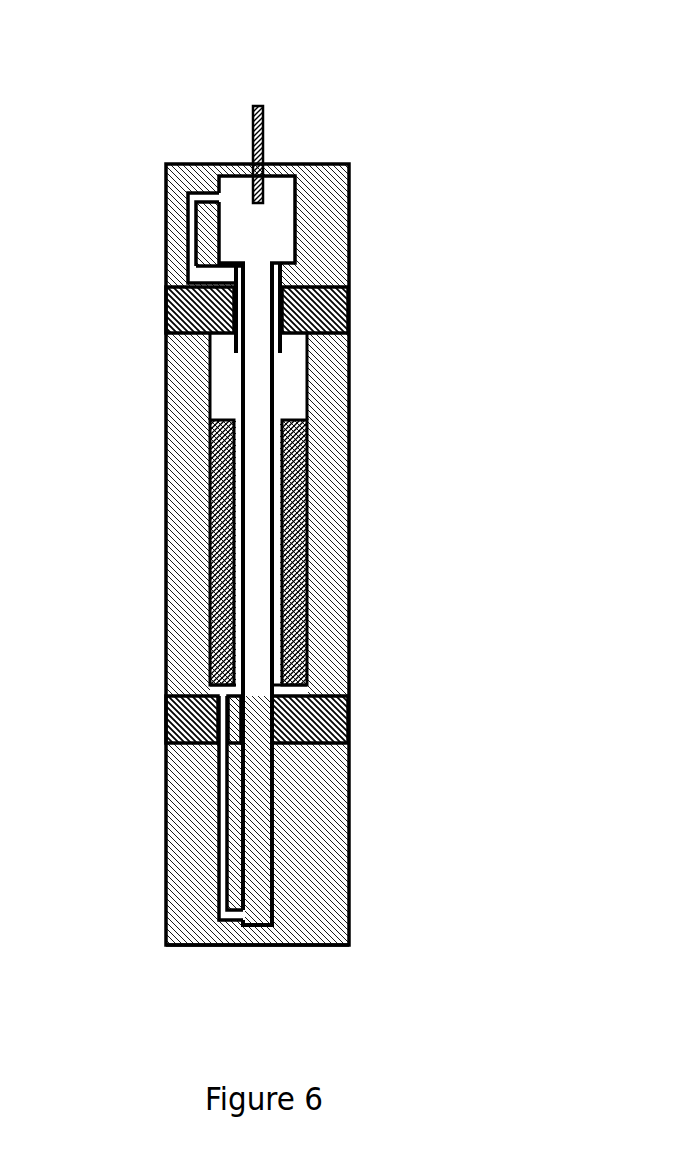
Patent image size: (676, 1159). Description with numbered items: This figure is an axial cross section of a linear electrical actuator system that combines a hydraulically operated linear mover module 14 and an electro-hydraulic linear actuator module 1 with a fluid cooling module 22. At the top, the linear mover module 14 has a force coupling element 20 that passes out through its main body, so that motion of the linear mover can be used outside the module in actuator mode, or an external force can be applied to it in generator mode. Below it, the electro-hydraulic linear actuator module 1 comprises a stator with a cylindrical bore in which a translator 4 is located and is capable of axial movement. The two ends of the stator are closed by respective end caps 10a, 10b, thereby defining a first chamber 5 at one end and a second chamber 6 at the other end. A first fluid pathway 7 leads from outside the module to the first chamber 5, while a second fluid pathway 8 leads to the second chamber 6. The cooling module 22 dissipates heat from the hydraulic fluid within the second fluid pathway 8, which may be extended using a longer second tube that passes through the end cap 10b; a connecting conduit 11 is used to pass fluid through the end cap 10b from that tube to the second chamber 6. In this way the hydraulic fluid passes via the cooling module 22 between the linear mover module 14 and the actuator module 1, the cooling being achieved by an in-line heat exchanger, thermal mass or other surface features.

The electro-hydraulic linear actuator module 1 is at (133, 292).
The hydraulically operated linear mover module 14 is at (133, 165).
The force coupling element 20 is at (266, 106).
The end cap 10a is at (317, 302).
The first chamber 5 is at (292, 343).
The first fluid pathway 7 is at (277, 383).
The translator 4 is at (288, 512).
The second chamber 6 is at (298, 667).
The end cap 10b is at (317, 720).
The fluid cooling module 22 is at (133, 749).
The second fluid pathway 8 is at (257, 395).
The connecting conduit 11 is at (218, 917).